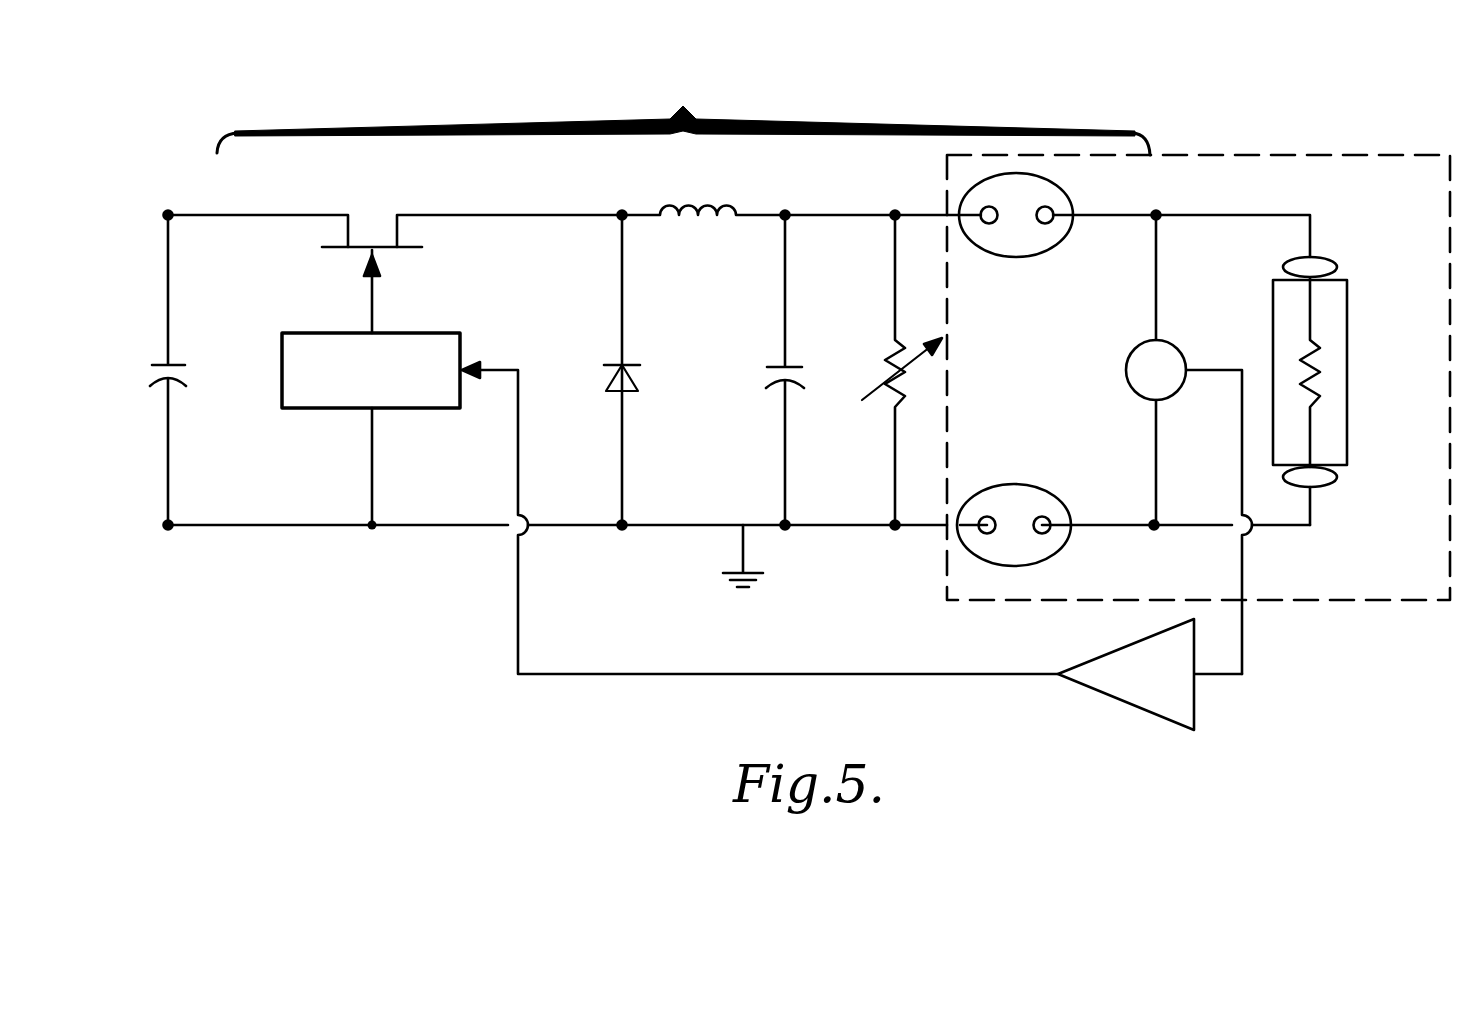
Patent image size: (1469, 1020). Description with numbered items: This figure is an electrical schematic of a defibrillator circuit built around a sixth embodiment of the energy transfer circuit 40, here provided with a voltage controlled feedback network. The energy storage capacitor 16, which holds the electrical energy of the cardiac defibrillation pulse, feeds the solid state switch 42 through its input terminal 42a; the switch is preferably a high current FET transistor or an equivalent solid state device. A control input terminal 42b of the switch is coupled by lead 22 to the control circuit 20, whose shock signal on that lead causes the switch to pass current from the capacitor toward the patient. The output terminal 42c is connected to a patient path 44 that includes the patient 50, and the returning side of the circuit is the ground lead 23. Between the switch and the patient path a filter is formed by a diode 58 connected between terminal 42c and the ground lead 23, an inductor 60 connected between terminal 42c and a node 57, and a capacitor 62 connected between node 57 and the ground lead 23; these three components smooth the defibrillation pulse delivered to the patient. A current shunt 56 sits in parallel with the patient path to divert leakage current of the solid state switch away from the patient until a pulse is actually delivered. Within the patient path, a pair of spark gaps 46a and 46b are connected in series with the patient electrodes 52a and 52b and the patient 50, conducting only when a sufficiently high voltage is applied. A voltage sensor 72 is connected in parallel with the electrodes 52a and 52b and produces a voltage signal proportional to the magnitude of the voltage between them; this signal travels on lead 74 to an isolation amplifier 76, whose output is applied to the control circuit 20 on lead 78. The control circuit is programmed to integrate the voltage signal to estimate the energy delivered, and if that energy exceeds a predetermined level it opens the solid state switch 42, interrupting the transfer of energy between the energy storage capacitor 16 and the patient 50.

The energy storage capacitor 16 is at (160, 364).
The control circuit 20 is at (300, 409).
The lead 22 is at (371, 286).
The ground lead 23 is at (458, 524).
The energy transfer circuit 40 is at (683, 115).
The solid state switch 42 is at (395, 218).
The input terminal 42a is at (288, 215).
The control input terminal 42b is at (375, 246).
The output terminal 42c is at (462, 215).
The patient path 44 is at (1402, 165).
The spark gap 46a is at (1014, 258).
The spark gap 46b is at (1012, 485).
The patient 50 is at (1287, 370).
The patient electrode 52a is at (1335, 266).
The patient electrode 52b is at (1335, 480).
The current shunt 56 is at (893, 342).
The node 57 is at (895, 213).
The diode 58 is at (613, 365).
The inductor 60 is at (703, 212).
The capacitor 62 is at (778, 367).
The voltage sensor 72 is at (1136, 348).
The lead 74 is at (1243, 622).
The isolation amplifier 76 is at (1105, 697).
The lead 78 is at (858, 673).